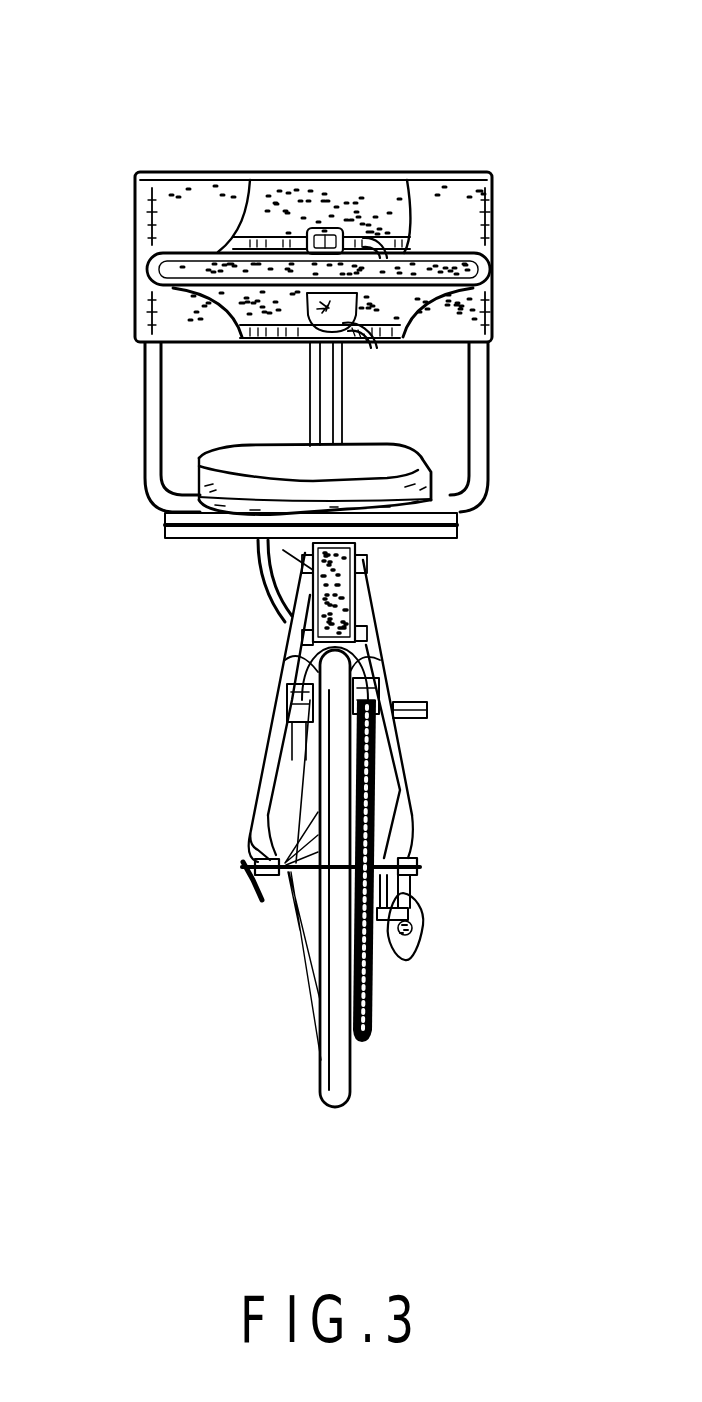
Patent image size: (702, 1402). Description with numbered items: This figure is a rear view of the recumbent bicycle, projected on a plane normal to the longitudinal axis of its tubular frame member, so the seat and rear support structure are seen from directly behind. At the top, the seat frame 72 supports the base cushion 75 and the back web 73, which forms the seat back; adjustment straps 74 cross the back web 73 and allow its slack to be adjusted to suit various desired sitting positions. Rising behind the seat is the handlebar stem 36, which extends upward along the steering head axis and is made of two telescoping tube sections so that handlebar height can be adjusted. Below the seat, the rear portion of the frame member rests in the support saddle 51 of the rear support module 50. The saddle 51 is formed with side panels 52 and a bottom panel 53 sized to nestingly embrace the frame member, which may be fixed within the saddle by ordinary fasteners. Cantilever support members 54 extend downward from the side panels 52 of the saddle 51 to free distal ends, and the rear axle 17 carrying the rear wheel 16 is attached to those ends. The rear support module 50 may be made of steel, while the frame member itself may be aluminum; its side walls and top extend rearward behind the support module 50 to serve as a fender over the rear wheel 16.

The rear wheel 16 is at (334, 1082).
The rear axle 17 is at (418, 867).
The handlebar stem 36 is at (333, 399).
The rear support module 50 is at (396, 668).
The support saddle 51 is at (370, 617).
The side panels 52 is at (300, 624).
The bottom panel 53 is at (290, 670).
The cantilever support members 54 is at (265, 780).
The seat frame 72 is at (480, 462).
The back web 73 is at (318, 200).
The adjustment straps 74 is at (383, 240).
The base cushion 75 is at (200, 446).